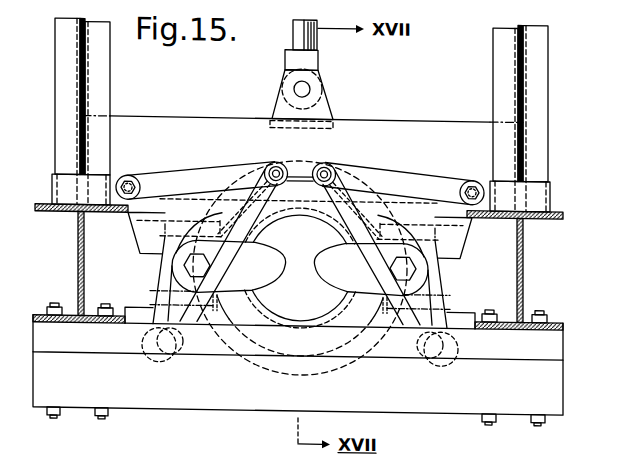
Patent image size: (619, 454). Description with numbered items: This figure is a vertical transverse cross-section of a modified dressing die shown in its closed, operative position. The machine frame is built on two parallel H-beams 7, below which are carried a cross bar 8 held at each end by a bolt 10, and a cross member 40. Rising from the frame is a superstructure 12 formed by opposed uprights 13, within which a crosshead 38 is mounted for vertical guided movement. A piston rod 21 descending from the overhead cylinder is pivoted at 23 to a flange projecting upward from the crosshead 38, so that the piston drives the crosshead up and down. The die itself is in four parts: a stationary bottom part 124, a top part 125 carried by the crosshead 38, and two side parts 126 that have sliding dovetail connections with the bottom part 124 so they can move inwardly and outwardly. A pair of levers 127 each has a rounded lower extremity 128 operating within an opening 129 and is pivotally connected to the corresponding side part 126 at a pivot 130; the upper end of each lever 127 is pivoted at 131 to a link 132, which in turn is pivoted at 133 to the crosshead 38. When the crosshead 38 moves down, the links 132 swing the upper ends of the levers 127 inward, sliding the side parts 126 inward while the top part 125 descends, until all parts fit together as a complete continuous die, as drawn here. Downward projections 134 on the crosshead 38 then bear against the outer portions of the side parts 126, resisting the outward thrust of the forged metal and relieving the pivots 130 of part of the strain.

The H-beam 7 is at (78, 237).
The cross bar 8 is at (562, 389).
The bolt 10 is at (102, 424).
The superstructure 12 is at (548, 164).
The upright 13 is at (56, 138).
The piston rod 21 is at (292, 40).
The pivot 23 is at (311, 89).
The crosshead 38 is at (436, 119).
The cross member 40 is at (562, 349).
The stationary bottom die part 124 is at (320, 318).
The top die part 125 is at (284, 210).
The side die part 126 is at (260, 275).
The lever 127 is at (178, 283).
The rounded lower extremity 128 is at (177, 356).
The opening 129 is at (146, 362).
The pivot 130 is at (192, 267).
The pivot 131 is at (273, 165).
The link 132 is at (203, 176).
The pivot 133 is at (143, 158).
The downward projection 134 is at (142, 245).